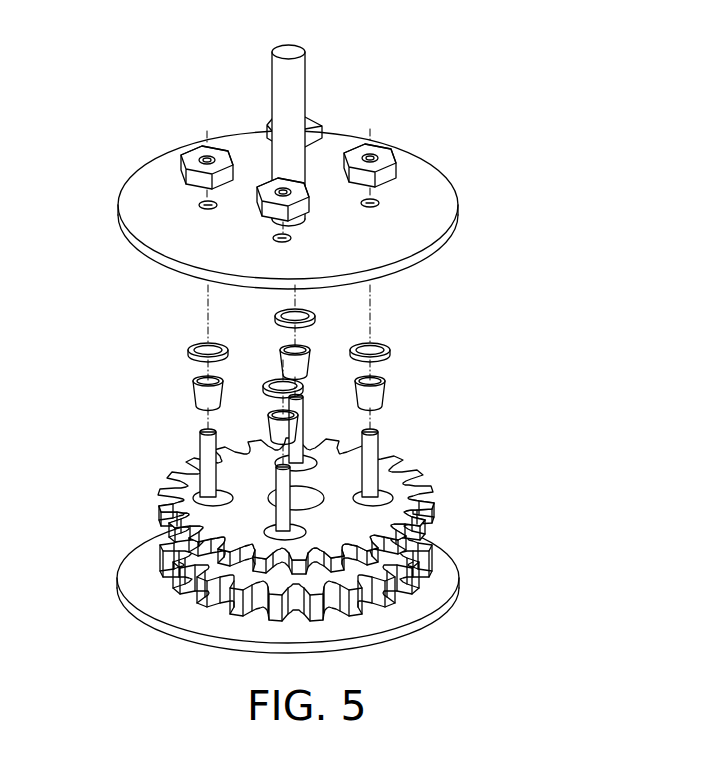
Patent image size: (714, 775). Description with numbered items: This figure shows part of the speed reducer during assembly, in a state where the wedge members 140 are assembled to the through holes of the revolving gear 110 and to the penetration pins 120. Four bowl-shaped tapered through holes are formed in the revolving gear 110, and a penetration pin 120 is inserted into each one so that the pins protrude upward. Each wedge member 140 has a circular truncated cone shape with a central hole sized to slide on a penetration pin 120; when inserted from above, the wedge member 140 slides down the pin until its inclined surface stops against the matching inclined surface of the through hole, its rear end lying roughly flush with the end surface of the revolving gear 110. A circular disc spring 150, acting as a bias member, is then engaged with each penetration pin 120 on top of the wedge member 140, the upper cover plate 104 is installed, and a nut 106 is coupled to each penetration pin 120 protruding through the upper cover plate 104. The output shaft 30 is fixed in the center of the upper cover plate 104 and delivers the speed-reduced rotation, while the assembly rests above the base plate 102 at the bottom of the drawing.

The output shaft 30 is at (300, 41).
The base plate 102 is at (459, 566).
The upper cover plate 104 is at (458, 210).
The nut 106 is at (262, 218).
The revolving gear 110 is at (430, 557).
The penetration pin 120 is at (275, 514).
The wedge member 140 is at (268, 425).
The disc spring 150 is at (390, 347).